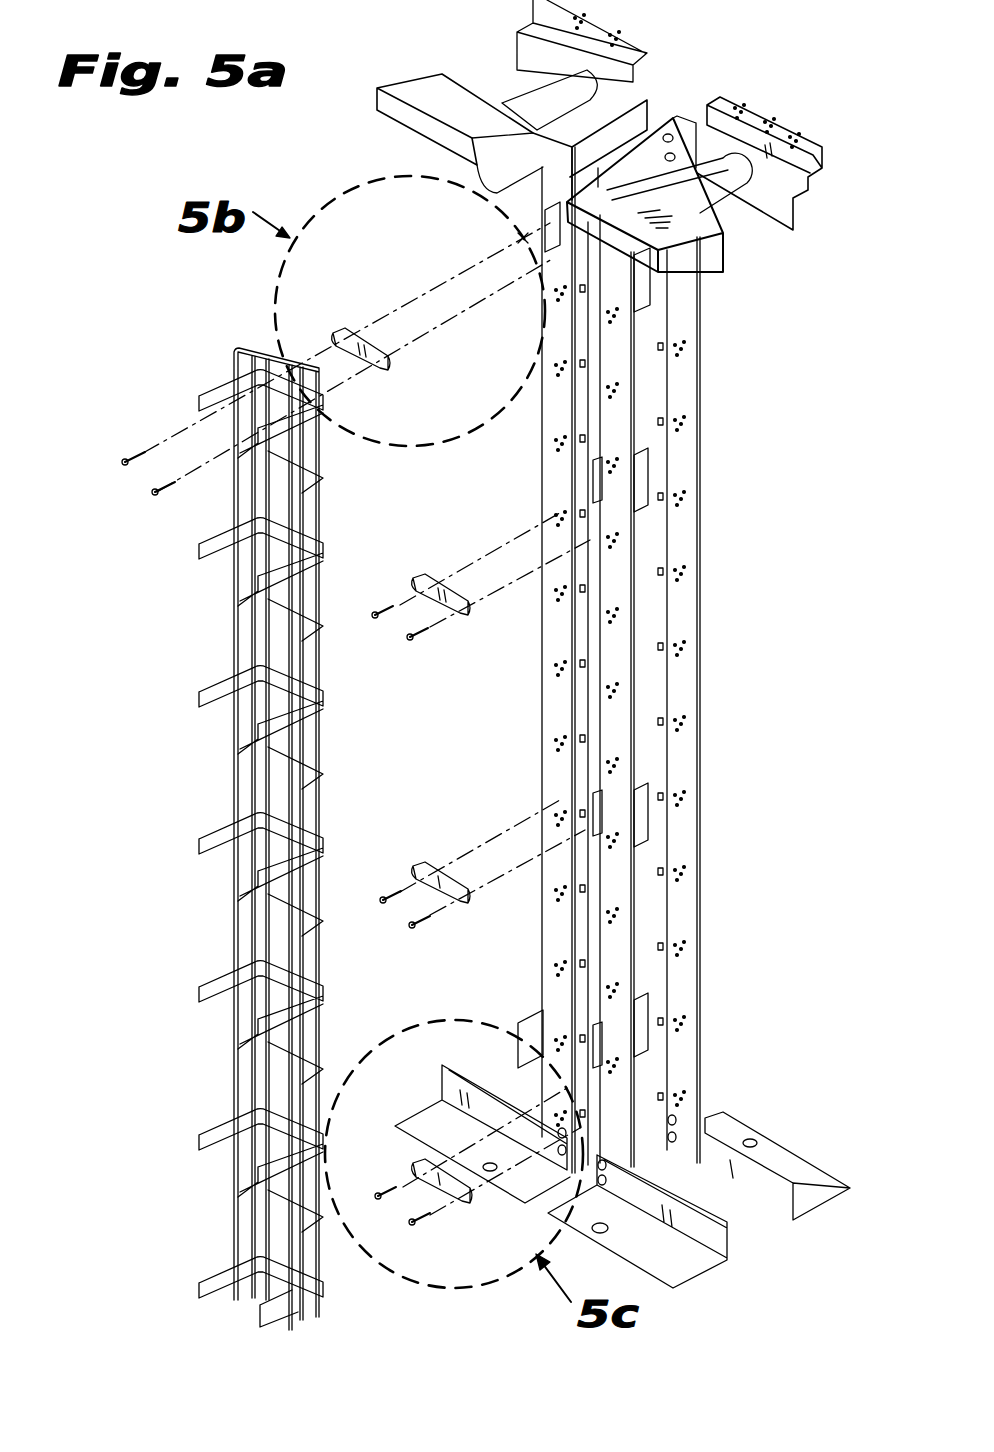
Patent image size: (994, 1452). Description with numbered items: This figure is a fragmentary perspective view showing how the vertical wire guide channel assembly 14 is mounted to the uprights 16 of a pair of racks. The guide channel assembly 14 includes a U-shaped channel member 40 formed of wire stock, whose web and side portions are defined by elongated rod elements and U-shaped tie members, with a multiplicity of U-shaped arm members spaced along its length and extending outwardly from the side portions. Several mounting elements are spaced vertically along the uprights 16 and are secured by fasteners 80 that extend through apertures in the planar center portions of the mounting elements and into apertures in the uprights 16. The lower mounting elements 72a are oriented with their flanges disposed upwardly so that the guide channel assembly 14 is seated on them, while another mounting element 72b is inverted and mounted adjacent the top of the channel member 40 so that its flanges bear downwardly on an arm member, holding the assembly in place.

The vertical wire guide channel assembly 14 is at (344, 546).
The uprights 16 is at (536, 722).
The U-shaped channel member 40 is at (168, 700).
The mounting element 72a is at (423, 580).
The mounting element 72b is at (348, 328).
The fasteners 80 is at (124, 458).